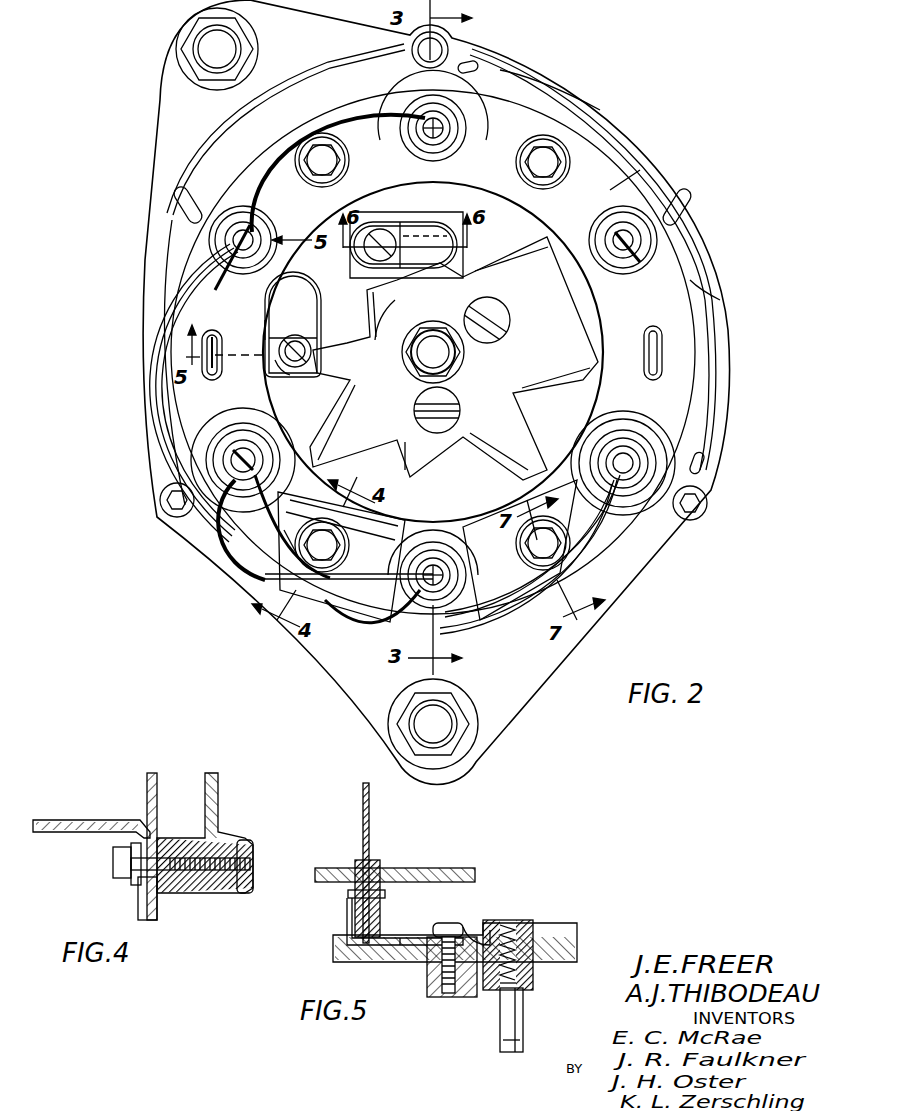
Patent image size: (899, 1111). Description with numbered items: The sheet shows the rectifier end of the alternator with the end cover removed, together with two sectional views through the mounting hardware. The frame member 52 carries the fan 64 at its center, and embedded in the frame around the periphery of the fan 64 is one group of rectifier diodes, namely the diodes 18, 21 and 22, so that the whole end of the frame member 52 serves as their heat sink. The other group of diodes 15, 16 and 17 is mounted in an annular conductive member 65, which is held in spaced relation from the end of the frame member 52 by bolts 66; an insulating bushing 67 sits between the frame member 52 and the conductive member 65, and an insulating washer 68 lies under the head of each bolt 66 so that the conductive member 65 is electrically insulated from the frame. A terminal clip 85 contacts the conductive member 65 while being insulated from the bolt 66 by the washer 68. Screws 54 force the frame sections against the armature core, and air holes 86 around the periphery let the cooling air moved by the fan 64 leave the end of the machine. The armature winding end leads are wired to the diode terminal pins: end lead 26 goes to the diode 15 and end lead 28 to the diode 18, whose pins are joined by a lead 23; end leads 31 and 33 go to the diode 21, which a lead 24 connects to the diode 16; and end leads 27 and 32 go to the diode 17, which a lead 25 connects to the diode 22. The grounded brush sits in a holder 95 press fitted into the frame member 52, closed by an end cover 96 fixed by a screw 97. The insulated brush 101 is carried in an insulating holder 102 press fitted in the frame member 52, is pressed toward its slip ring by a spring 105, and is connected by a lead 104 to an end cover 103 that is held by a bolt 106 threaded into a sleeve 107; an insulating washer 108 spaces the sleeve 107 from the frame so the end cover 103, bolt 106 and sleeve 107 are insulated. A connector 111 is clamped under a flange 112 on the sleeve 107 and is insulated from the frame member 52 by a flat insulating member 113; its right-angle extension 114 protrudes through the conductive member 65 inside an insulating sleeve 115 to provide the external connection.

In FIG. 2, the diode 15 is at (240, 445).
In FIG. 2, the diode 16 is at (445, 122).
In FIG. 2, the diode 17 is at (600, 480).
In FIG. 2, the diode 18 is at (445, 600).
In FIG. 2, the diode 21 is at (258, 228).
In FIG. 2, the diode 22 is at (610, 225).
In FIG. 2, the lead 23 is at (285, 548).
In FIG. 2, the lead 24 is at (288, 130).
In FIG. 2, the lead 25 is at (688, 386).
In FIG. 2, the end lead 26 is at (230, 548).
In FIG. 2, the end lead 27 is at (497, 620).
In FIG. 2, the end lead 28 is at (370, 626).
In FIG. 2, the end lead 31 is at (170, 378).
In FIG. 2, the end lead 32 is at (505, 638).
In FIG. 2, the end lead 33 is at (160, 328).
In FIG. 2, the screws 54 is at (440, 48).
In FIG. 2, the fan 64 is at (454, 358).
In FIG. 2, the conductive member 65 is at (632, 182).
In FIG. 4, the conductive member 65 is at (157, 895).
In FIG. 5, the conductive member 65 is at (398, 870).
In FIG. 2, the bolts 66 is at (330, 162).
In FIG. 4, the bolts 66 is at (113, 858).
In FIG. 4, the insulating bushing 67 is at (172, 840).
In FIG. 2, the insulating washer 68 is at (352, 542).
In FIG. 4, the insulating washer 68 is at (131, 845).
In FIG. 2, the terminal clip 85 is at (340, 582).
In FIG. 4, the terminal clip 85 is at (80, 822).
In FIG. 2, the air holes 86 is at (240, 135).
In FIG. 2, the holder 95 is at (440, 236).
In FIG. 2, the end cover 96 is at (412, 238).
In FIG. 2, the screw 97 is at (382, 236).
In FIG. 5, the brush 101 is at (506, 1040).
In FIG. 2, the holder 102 is at (318, 295).
In FIG. 5, the holder 102 is at (532, 922).
In FIG. 2, the end cover 103 is at (285, 312).
In FIG. 5, the end cover 103 is at (496, 922).
In FIG. 5, the lead 104 is at (525, 985).
In FIG. 5, the spring 105 is at (500, 985).
In FIG. 2, the bolt 106 is at (306, 340).
In FIG. 5, the bolt 106 is at (470, 928).
In FIG. 5, the sleeve 107 is at (442, 993).
In FIG. 5, the insulating washer 108 is at (435, 968).
In FIG. 2, the connector 111 is at (280, 372).
In FIG. 5, the connector 111 is at (398, 938).
In FIG. 5, the flange 112 is at (440, 925).
In FIG. 5, the flat insulating member 113 is at (370, 945).
In FIG. 2, the extension 114 is at (214, 337).
In FIG. 5, the extension 114 is at (370, 822).
In FIG. 2, the insulating sleeve 115 is at (218, 350).
In FIG. 5, the insulating sleeve 115 is at (356, 906).
In FIG. 4, the frame member 52 is at (250, 890).
In FIG. 5, the frame member 52 is at (444, 952).